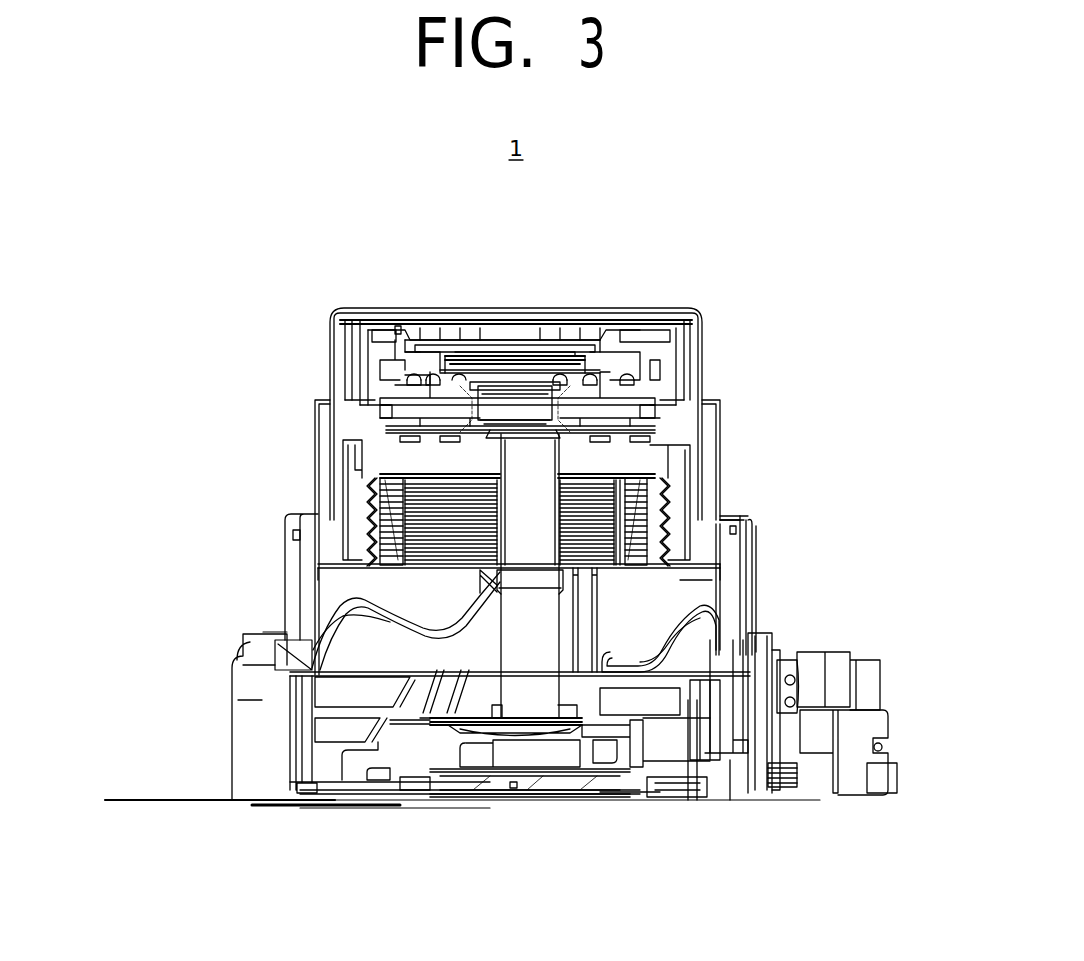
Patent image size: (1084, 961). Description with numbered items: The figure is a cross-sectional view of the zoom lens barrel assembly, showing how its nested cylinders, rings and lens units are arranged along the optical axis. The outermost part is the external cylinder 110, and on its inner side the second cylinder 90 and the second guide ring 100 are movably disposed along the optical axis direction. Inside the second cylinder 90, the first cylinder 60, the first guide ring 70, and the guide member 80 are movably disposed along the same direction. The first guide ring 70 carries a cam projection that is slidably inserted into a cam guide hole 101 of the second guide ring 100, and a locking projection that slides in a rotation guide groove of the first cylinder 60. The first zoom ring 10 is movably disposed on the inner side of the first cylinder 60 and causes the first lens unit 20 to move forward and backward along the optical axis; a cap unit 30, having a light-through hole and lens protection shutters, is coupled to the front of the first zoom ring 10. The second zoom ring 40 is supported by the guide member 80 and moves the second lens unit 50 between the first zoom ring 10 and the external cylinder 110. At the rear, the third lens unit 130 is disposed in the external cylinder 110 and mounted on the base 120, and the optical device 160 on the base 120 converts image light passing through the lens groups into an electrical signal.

The first zoom ring 10 is at (690, 350).
The first lens unit 20 is at (521, 398).
The cap unit 30 is at (648, 308).
The second zoom ring 40 is at (648, 398).
The second lens unit 50 is at (494, 402).
The first cylinder 60 is at (704, 443).
The first guide ring 70 is at (362, 486).
The guide member 80 is at (312, 528).
The second cylinder 90 is at (738, 580).
The second guide ring 100 is at (720, 552).
The cam guide hole 101 is at (275, 640).
The external cylinder 110 is at (760, 640).
The base 120 is at (706, 800).
The third lens unit 130 is at (520, 728).
The optical device 160 is at (545, 752).